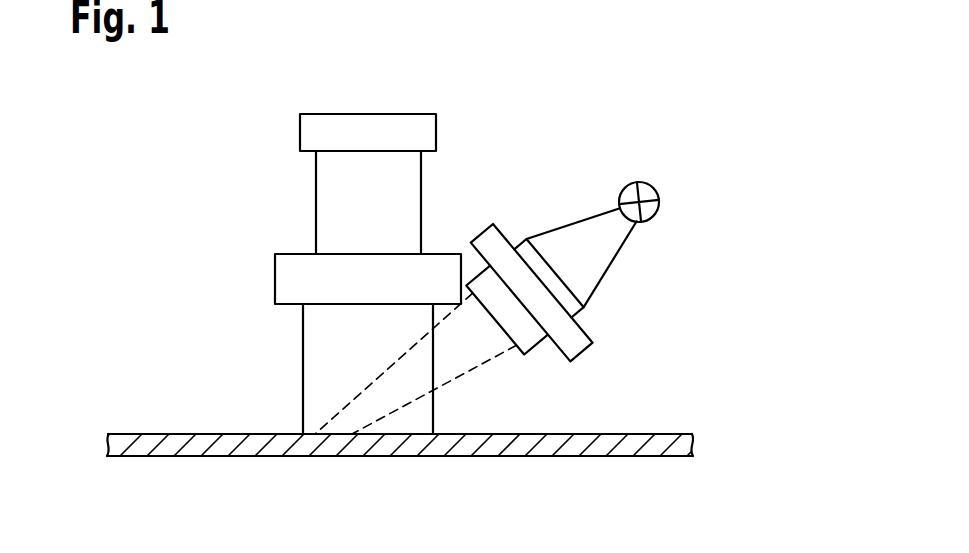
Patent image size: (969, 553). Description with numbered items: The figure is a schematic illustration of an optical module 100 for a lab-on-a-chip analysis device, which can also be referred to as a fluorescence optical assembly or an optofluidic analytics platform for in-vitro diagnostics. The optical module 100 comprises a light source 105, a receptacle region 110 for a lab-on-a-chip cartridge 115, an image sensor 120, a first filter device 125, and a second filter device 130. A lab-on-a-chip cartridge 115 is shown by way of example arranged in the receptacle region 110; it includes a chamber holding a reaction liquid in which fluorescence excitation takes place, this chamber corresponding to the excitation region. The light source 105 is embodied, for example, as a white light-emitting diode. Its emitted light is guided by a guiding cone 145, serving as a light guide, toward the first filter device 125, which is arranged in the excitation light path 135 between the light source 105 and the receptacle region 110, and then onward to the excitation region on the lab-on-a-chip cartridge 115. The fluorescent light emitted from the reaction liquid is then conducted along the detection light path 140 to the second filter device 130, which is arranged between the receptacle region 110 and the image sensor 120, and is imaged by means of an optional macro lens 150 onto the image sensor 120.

The optical module 100 is at (635, 125).
The light source 105 is at (659, 200).
The receptacle region 110 is at (703, 415).
The lab-on-a-chip cartridge 115 is at (123, 434).
The image sensor 120 is at (300, 127).
The first filter device 125 is at (580, 354).
The second filter device 130 is at (275, 280).
The excitation light path 135 is at (441, 361).
The detection light path 140 is at (360, 368).
The guiding cone 145 is at (603, 269).
The macro lens 150 is at (316, 196).